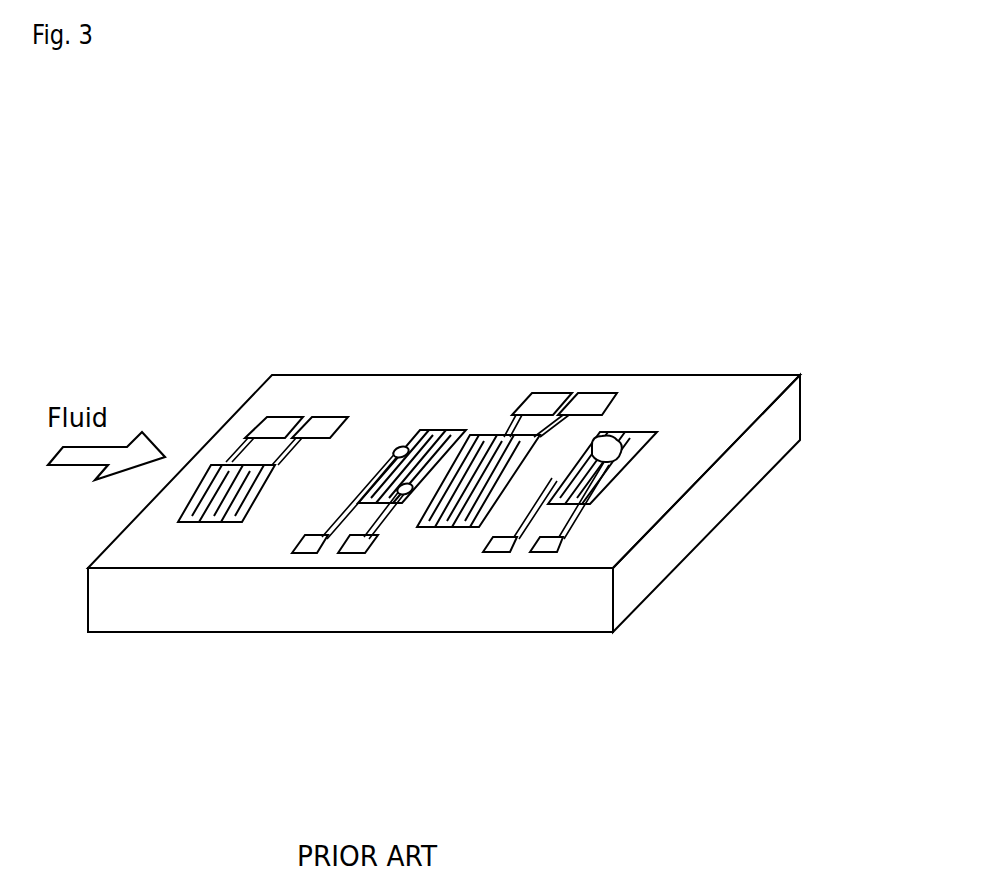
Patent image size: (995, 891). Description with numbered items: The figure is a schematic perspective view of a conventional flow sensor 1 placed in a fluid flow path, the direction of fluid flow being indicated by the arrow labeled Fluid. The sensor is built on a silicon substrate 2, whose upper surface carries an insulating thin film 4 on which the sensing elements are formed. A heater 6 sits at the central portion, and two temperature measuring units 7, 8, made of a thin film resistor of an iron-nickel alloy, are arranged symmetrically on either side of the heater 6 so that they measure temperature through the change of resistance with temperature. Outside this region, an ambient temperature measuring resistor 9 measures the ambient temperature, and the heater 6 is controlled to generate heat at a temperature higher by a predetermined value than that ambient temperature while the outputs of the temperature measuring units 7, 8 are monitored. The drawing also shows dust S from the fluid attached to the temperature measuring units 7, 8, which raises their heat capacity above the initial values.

The flow sensor 1 is at (725, 254).
The silicon substrate 2 is at (322, 606).
The insulating thin film 4 is at (500, 395).
The heater 6 is at (458, 527).
The temperature measuring unit 7 is at (453, 430).
The temperature measuring unit 8 is at (634, 435).
The ambient temperature measuring resistor 9 is at (240, 457).
The dust S is at (403, 446).